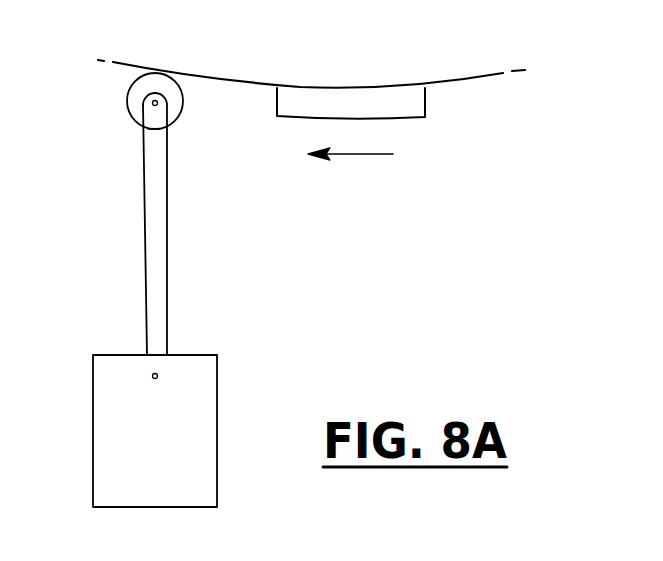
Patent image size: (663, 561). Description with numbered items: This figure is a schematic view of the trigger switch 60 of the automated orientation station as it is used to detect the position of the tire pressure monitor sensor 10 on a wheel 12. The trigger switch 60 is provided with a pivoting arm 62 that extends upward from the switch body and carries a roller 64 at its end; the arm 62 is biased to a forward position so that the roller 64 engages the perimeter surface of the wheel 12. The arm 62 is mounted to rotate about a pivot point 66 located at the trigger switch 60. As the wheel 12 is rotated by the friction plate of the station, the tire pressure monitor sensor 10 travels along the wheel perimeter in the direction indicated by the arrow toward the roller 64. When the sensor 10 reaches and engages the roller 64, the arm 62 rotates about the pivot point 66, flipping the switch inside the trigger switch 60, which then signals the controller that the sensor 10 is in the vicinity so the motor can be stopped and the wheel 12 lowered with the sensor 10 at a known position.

The tire pressure monitor sensor 10 is at (428, 99).
The wheel 12 is at (492, 77).
The trigger switch 60 is at (235, 407).
The arm 62 is at (155, 238).
The roller 64 is at (127, 103).
The pivot point 66 is at (153, 373).